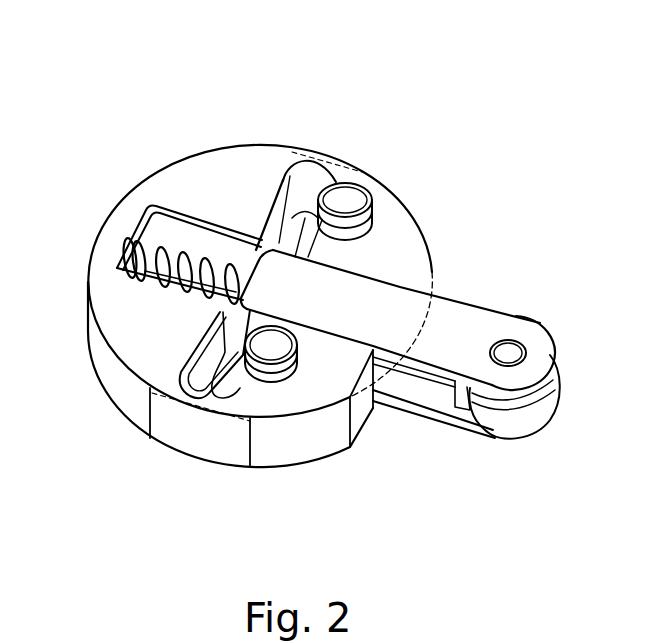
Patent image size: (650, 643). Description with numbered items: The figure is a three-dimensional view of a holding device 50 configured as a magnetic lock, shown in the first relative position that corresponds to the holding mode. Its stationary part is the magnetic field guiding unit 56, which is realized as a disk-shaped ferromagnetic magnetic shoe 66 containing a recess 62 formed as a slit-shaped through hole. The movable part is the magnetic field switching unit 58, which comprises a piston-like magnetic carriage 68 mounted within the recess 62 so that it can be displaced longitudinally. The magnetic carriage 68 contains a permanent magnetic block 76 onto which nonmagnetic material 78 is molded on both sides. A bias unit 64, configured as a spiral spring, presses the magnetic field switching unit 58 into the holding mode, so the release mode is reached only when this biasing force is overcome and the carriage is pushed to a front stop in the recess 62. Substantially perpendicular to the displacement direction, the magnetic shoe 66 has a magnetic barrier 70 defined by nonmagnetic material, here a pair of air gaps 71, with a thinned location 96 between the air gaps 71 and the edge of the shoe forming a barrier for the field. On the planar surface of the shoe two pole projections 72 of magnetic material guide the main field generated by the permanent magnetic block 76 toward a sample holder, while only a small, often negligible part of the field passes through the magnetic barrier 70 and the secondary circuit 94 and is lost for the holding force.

The holding device 50 is at (67, 122).
The magnetic field guiding unit 56 is at (173, 188).
The magnetic field switching unit 58 is at (491, 316).
The recess 62 is at (200, 298).
The bias unit 64 is at (165, 292).
The magnetic shoe 66 is at (232, 180).
The magnetic carriage 68 is at (403, 322).
The magnetic barrier 70 is at (319, 156).
The air gaps 71 is at (224, 372).
The pole projections 72 is at (347, 207).
The permanent magnetic block 76 is at (306, 308).
The nonmagnetic material 78 is at (430, 385).
The secondary circuit 94 is at (125, 248).
The thinned location 96 is at (177, 420).